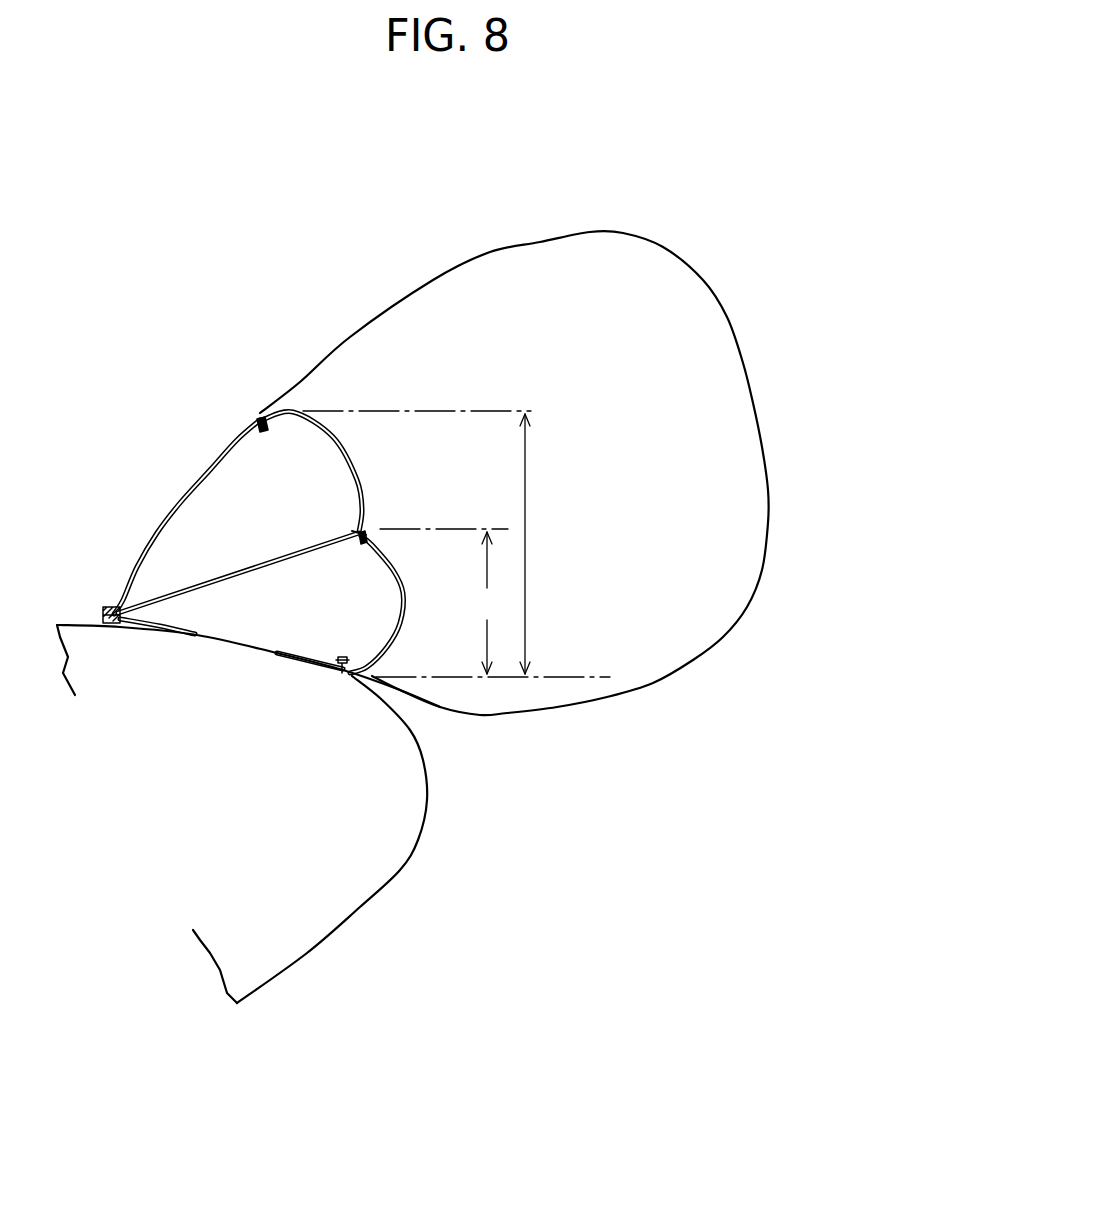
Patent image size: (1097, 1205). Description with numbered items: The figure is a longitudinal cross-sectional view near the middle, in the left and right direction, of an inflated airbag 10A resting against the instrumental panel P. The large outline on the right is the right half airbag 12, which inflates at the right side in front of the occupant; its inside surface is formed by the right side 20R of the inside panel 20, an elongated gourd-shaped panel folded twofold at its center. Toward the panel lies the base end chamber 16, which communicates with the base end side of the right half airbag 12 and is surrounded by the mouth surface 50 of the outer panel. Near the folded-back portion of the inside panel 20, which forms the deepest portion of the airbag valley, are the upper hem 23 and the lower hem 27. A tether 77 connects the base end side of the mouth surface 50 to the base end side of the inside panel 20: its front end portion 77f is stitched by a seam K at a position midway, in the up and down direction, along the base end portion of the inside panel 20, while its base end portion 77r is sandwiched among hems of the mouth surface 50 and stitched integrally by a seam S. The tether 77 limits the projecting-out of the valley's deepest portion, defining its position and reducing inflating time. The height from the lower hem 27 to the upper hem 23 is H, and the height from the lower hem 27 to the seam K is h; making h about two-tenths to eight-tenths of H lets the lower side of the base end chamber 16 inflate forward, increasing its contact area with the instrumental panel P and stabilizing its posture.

The airbag 10A is at (496, 427).
The right half airbag 12 is at (542, 427).
The right side of the inside panel 20R is at (735, 432).
The base end chamber 16 is at (259, 563).
The mouth surface 50 is at (177, 507).
The inside panel 20 is at (348, 449).
The tether 77 is at (240, 570).
The front end portion of the tether 77f is at (357, 527).
The base end portion of the tether 77r is at (150, 620).
The upper hem 23 is at (257, 420).
The lower hem 27 is at (344, 680).
The seam K is at (366, 525).
The seam S is at (269, 432).
The height of the inside panel base end side H is at (527, 547).
The height to the tether stitching position h is at (444, 601).
The instrumental panel P is at (423, 753).